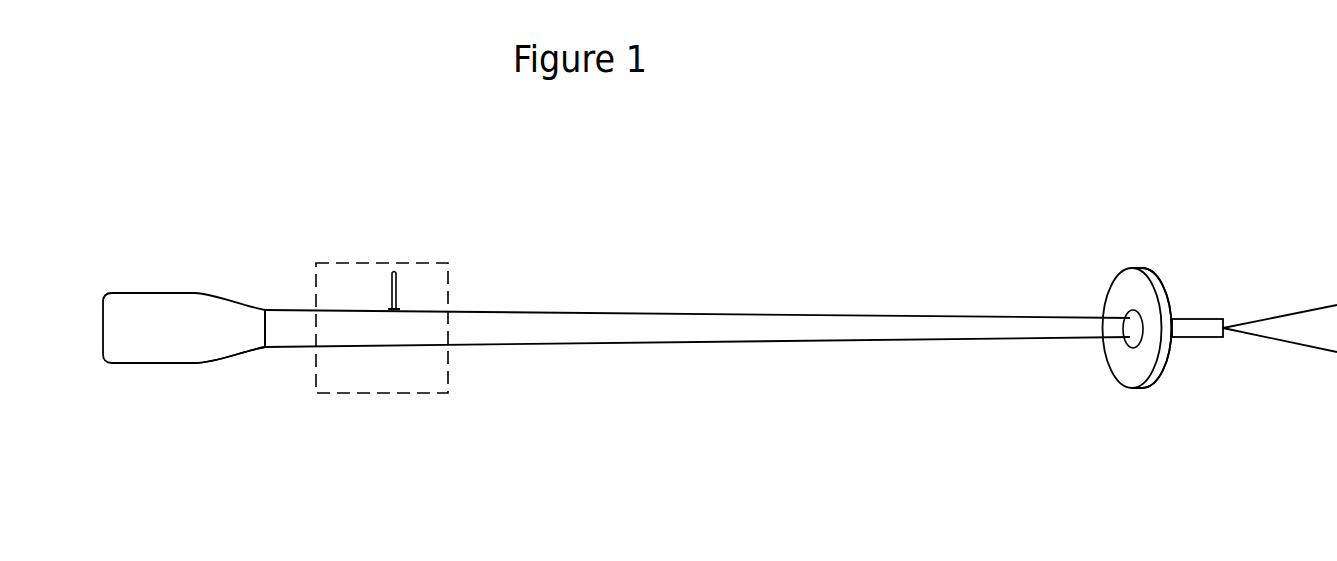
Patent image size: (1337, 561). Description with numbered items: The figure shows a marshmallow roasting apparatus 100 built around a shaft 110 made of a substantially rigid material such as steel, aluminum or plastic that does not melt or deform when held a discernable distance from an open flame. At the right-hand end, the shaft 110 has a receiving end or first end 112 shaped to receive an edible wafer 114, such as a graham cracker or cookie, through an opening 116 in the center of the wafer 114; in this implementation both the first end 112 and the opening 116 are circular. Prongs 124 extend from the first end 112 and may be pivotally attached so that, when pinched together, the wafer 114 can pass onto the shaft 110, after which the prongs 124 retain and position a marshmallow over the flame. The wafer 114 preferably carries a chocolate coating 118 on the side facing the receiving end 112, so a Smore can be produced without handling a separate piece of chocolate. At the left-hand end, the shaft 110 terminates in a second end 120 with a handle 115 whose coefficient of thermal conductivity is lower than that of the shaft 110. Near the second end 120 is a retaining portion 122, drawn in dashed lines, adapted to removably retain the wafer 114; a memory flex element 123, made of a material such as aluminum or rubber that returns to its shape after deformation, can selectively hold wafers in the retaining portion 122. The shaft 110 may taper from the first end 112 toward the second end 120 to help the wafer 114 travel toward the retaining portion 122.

The marshmallow roasting apparatus 100 is at (658, 192).
The shaft 110 is at (788, 343).
The first end 112 is at (1212, 338).
The edible wafer 114 is at (1168, 269).
The handle 115 is at (167, 357).
The opening 116 is at (1128, 316).
The chocolate coating 118 is at (1158, 387).
The second end 120 is at (150, 300).
The retaining portion 122 is at (350, 262).
The memory flex element 123 is at (396, 273).
The prongs 124 is at (1297, 315).